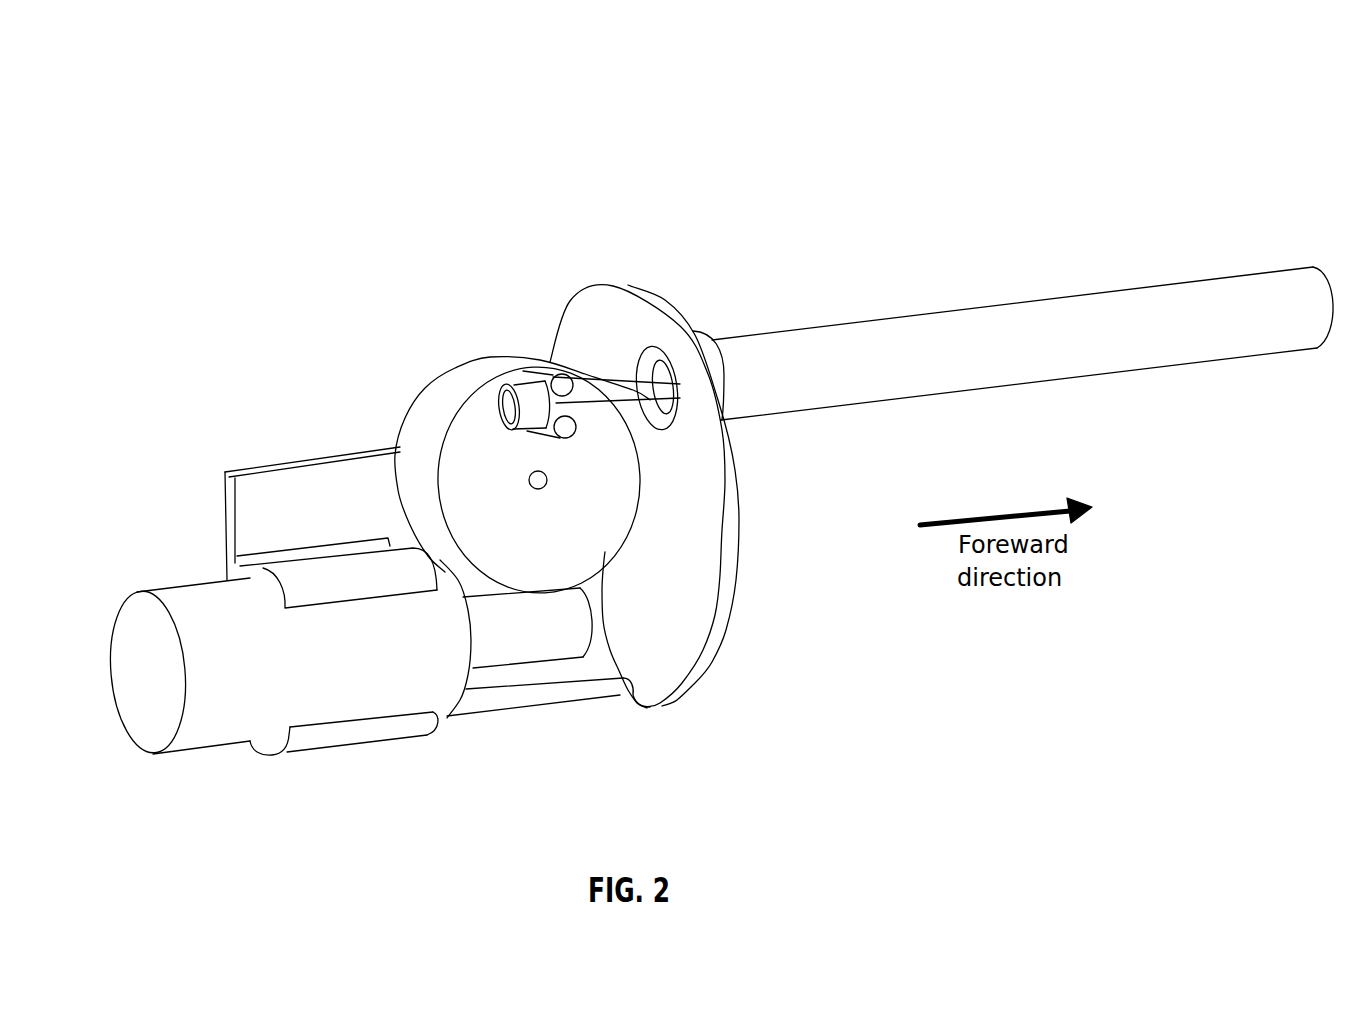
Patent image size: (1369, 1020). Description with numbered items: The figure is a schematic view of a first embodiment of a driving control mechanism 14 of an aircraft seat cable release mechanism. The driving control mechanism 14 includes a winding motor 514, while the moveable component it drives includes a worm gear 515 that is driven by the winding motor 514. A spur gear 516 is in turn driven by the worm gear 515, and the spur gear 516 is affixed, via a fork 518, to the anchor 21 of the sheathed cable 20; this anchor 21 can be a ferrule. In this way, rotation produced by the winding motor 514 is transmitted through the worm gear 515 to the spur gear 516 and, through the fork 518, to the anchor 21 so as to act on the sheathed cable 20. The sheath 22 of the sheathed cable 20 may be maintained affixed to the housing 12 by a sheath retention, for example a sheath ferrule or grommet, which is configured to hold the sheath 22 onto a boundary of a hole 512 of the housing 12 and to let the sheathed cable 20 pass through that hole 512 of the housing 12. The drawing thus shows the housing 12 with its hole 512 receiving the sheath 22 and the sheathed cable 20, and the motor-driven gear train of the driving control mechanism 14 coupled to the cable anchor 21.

The housing 12 is at (327, 458).
The driving control mechanism 14 is at (817, 208).
The sheathed cable 20 is at (670, 398).
The anchor 21 is at (500, 418).
The sheath 22 is at (1040, 375).
The hole 512 is at (723, 353).
The winding motor 514 is at (447, 690).
The worm gear 515 is at (577, 625).
The spur gear 516 is at (582, 477).
The fork 518 is at (507, 380).